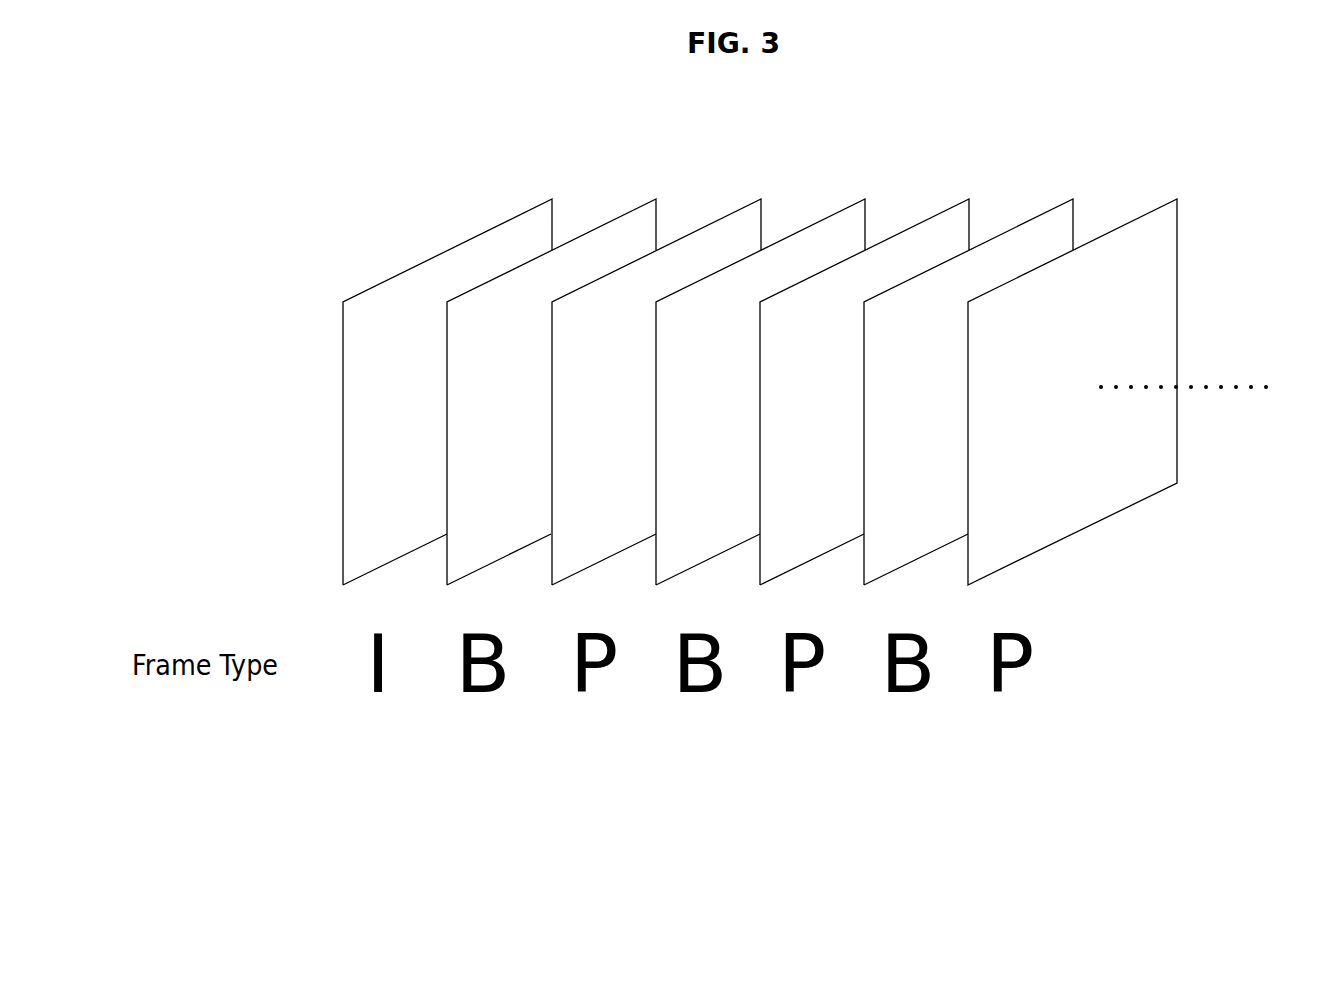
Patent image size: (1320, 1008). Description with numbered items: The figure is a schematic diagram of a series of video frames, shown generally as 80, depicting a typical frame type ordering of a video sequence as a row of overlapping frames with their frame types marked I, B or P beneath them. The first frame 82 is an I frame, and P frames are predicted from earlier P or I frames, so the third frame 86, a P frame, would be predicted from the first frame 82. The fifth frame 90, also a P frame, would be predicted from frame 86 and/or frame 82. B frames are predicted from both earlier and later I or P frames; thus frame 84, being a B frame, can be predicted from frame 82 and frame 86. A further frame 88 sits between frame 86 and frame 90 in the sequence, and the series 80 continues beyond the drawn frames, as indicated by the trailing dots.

The series of video frames 80 is at (805, 555).
The first frame 82 is at (408, 471).
The frame 84 is at (480, 471).
The third frame 86 is at (595, 471).
The B-frame 88 is at (698, 471).
The fifth frame 90 is at (824, 471).